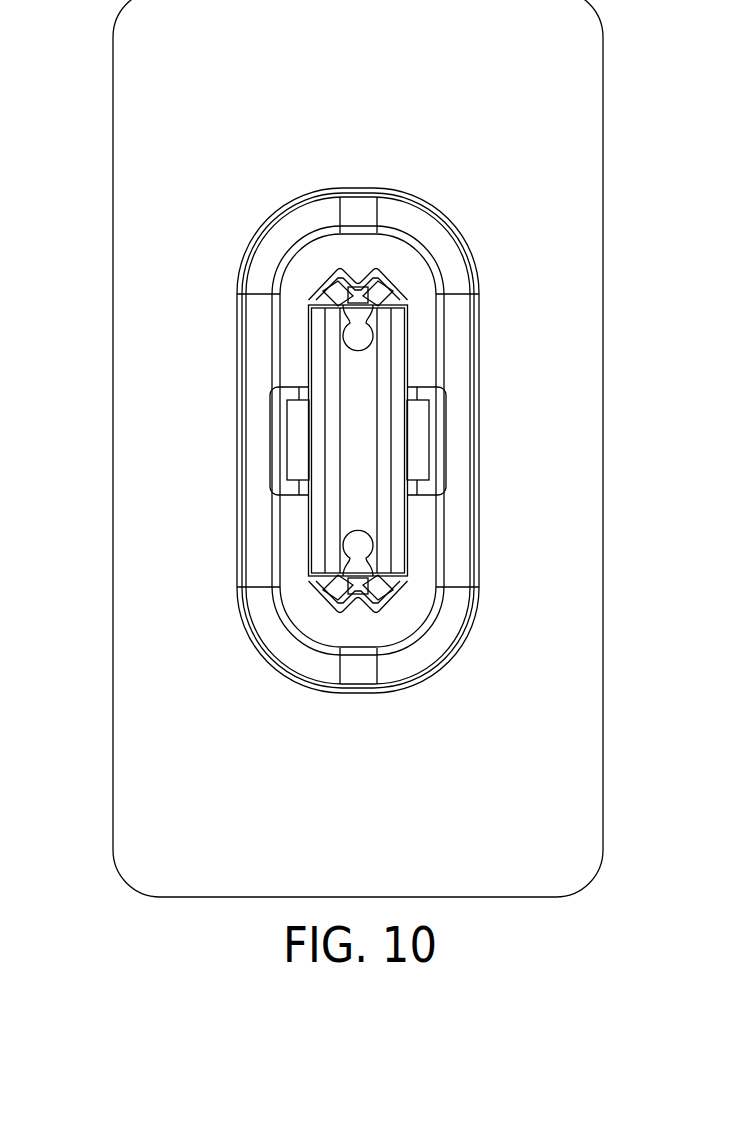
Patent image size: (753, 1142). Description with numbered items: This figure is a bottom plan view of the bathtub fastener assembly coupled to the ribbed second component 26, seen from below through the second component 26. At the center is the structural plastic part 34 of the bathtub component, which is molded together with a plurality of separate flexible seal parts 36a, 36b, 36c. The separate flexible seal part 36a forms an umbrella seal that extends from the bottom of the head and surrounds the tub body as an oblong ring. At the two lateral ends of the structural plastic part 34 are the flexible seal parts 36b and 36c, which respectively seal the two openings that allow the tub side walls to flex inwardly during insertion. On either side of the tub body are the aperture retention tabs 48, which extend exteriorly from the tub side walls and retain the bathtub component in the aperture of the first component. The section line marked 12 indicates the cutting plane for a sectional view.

The section line 12- 12 is at (136, 439).
The second component 26 is at (608, 157).
The structural plastic part 34 is at (357, 253).
The separate flexible seal part 36a is at (464, 334).
The flexible seal part 36b is at (371, 266).
The flexible seal part 36c is at (348, 610).
The aperture retention tab 48 is at (420, 440).